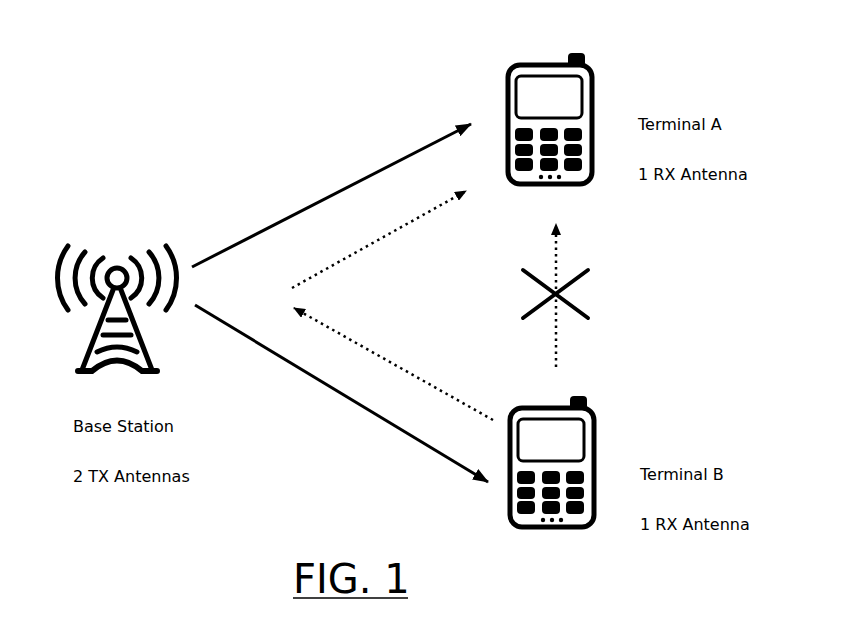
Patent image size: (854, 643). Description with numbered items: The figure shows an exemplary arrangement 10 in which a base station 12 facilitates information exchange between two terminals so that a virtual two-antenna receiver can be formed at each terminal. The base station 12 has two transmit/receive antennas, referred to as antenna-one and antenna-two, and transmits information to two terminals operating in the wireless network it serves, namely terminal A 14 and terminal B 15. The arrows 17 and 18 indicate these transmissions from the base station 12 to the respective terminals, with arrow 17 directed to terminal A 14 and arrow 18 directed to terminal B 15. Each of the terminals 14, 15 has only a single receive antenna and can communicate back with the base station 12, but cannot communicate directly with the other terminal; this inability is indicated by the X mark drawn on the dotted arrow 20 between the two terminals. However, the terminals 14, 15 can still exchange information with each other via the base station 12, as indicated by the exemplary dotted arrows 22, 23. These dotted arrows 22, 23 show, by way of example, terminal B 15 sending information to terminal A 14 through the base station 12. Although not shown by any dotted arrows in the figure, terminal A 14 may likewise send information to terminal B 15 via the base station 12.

The arrangement 10 is at (145, 88).
The base station 12 is at (115, 257).
The terminal A 14 is at (600, 102).
The terminal B 15 is at (608, 443).
The arrow 17 is at (360, 180).
The arrow 18 is at (337, 392).
The dotted arrow 20 is at (568, 253).
The dotted arrow 22 is at (382, 358).
The dotted arrow 23 is at (415, 218).